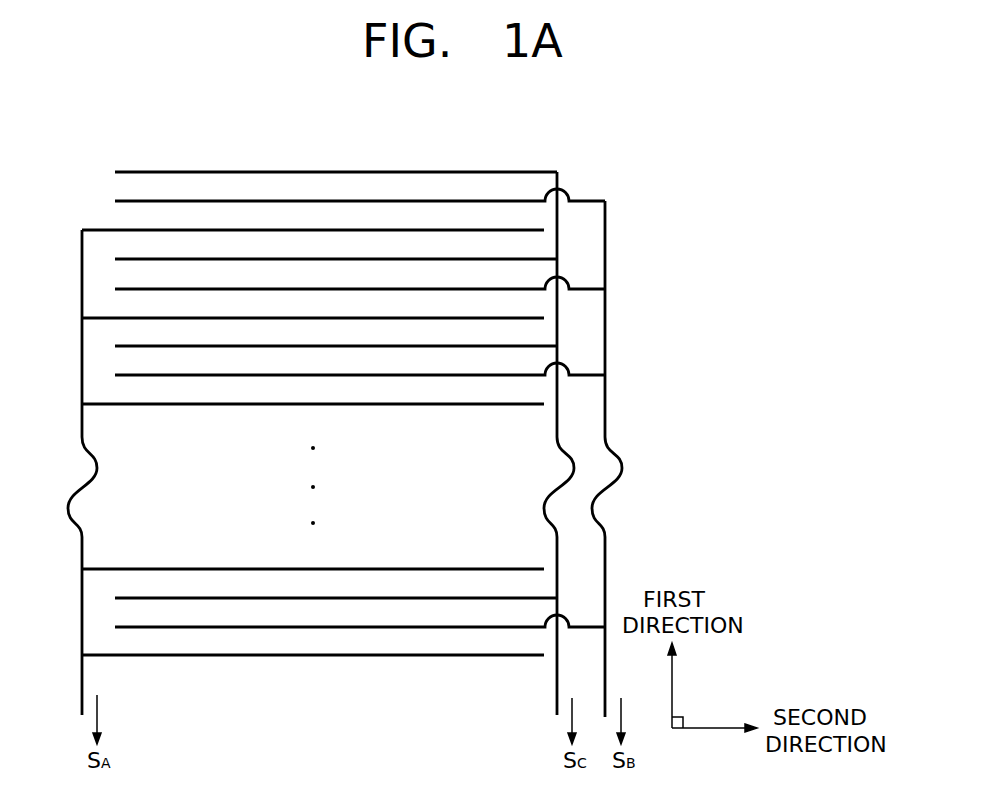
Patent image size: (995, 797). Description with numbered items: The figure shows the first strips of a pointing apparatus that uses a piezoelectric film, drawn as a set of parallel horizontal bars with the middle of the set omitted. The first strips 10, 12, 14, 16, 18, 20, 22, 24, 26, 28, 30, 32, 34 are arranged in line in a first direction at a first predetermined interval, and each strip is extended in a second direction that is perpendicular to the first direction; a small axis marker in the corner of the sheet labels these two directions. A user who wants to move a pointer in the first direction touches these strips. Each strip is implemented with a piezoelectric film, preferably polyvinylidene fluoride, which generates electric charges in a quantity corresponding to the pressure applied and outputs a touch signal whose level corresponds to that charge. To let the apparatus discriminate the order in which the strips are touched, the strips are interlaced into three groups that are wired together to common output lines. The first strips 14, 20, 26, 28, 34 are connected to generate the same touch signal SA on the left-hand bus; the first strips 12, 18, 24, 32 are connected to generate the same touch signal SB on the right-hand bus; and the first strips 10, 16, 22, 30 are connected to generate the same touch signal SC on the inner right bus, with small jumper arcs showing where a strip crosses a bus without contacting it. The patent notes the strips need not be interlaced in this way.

The first strip 10 is at (116, 171).
The first strip 12 is at (116, 200).
The first strip 14 is at (108, 229).
The first strip 16 is at (116, 258).
The first strip 18 is at (116, 288).
The first strip 20 is at (104, 317).
The first strip 22 is at (540, 346).
The first strip 24 is at (525, 377).
The first strip 26 is at (525, 405).
The first strip 28 is at (106, 568).
The first strip 30 is at (116, 597).
The first strip 32 is at (116, 626).
The first strip 34 is at (106, 654).